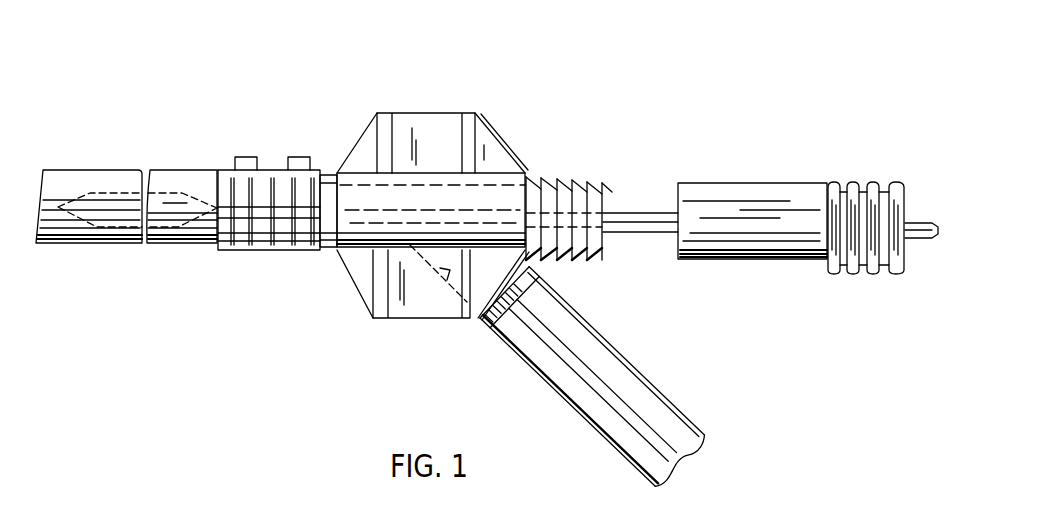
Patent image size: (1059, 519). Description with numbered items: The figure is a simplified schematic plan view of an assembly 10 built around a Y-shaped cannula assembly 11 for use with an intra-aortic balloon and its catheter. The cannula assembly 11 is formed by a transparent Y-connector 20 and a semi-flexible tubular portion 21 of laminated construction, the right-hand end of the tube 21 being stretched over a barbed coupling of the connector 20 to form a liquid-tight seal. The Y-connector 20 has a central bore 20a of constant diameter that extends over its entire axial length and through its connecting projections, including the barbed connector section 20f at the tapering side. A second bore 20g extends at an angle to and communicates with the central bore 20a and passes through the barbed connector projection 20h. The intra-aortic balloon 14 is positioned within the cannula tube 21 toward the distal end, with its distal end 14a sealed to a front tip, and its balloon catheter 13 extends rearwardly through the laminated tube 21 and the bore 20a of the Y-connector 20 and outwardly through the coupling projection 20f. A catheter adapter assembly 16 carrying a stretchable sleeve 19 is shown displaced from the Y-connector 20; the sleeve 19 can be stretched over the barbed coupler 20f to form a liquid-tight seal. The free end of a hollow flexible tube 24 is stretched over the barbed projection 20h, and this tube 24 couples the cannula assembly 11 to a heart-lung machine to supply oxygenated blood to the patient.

The Y-shaped cannula assembly 11 is at (414, 58).
The semi-flexible tubular portion 21 is at (134, 152).
The intra-aortic balloon 14 is at (178, 191).
The distal end of the balloon 14a is at (58, 234).
The assembly 10 is at (268, 304).
The balloon catheter 13 is at (337, 173).
The Y-connector 20 is at (530, 150).
The central bore 20a is at (426, 184).
The bore 20g is at (403, 318).
The barbed connector projection 20h is at (480, 320).
The barbed connector section 20f is at (577, 180).
The hollow flexible tube 24 is at (603, 330).
The catheter adapter assembly 16 is at (747, 165).
The stretchable sleeve 19 is at (770, 260).